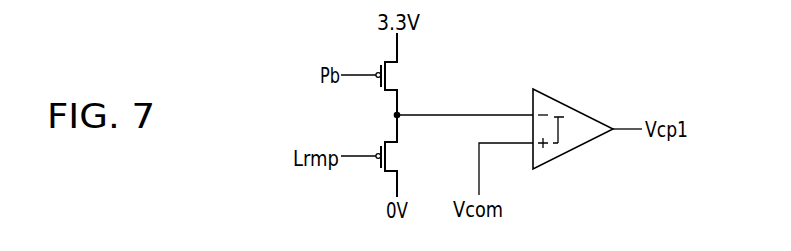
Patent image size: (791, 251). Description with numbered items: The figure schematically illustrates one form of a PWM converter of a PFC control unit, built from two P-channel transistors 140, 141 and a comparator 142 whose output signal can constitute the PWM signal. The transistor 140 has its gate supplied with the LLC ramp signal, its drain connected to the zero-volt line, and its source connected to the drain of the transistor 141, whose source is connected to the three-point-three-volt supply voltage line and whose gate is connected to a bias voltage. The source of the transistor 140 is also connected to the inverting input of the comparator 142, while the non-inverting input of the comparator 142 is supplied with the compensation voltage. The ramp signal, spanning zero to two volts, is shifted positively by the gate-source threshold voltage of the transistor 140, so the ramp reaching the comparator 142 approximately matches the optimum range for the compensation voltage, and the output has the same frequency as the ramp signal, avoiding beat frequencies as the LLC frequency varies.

The P-channel transistor 140 is at (395, 158).
The P-channel transistor 141 is at (395, 76).
The comparator 142 is at (575, 115).